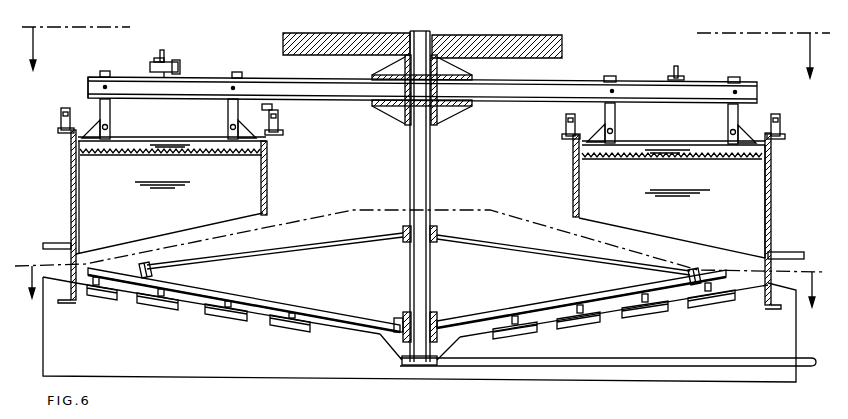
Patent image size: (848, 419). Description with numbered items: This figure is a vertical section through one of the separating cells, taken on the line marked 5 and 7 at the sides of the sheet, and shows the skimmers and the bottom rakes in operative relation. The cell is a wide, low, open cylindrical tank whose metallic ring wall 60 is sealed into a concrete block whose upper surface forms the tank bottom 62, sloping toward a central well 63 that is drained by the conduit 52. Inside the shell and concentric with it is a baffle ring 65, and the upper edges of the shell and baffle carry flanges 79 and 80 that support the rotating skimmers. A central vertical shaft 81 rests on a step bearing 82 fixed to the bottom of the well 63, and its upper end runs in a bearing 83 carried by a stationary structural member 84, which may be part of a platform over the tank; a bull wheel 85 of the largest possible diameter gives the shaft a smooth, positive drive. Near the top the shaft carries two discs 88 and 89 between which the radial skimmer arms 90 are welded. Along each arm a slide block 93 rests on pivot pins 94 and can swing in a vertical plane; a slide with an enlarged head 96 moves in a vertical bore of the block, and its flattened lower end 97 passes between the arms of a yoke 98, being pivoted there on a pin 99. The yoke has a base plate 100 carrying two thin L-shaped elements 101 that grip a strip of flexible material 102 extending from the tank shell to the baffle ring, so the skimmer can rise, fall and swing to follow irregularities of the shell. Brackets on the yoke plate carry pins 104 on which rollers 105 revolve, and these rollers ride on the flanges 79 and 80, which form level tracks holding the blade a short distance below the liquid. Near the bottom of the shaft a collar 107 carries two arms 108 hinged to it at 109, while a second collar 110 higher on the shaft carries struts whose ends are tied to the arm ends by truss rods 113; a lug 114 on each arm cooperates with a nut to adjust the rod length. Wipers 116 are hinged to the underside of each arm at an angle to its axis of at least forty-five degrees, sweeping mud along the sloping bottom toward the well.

The section line 5- 5 is at (426, 63).
The section line 7- 7 is at (420, 299).
The conduit 52 is at (667, 358).
The ring wall 60 is at (71, 176).
The tank bottom 62 is at (190, 303).
The central well 63 is at (452, 348).
The baffle ring 65 is at (268, 181).
The flange 79 is at (60, 133).
The flange 80 is at (274, 136).
The central vertical shaft 81 is at (431, 195).
The step bearing 82 is at (400, 352).
The bearing 83 is at (431, 38).
The stationary structural member 84 is at (562, 47).
The bull wheel 85 is at (179, 70).
The disc 88 is at (471, 78).
The disc 89 is at (472, 106).
The skimmer arm 90 is at (293, 80).
The slide block 93 is at (110, 102).
The pivot pin 94 is at (87, 86).
The enlarged head 96 is at (107, 73).
The flattened lower end 97 is at (110, 113).
The yoke 98 is at (230, 127).
The pin 99 is at (108, 127).
The base plate 100 is at (150, 138).
The L-shaped element 101 is at (117, 149).
The strip of flexible material 102 is at (232, 152).
The pin 104 is at (276, 124).
The roller 105 is at (273, 112).
The collar 107 is at (438, 318).
The arm 108 is at (289, 284).
The hinge 109 is at (394, 318).
The second collar 110 is at (436, 237).
The truss rod 113 is at (318, 247).
The lug 114 is at (150, 264).
The wiper 116 is at (218, 315).